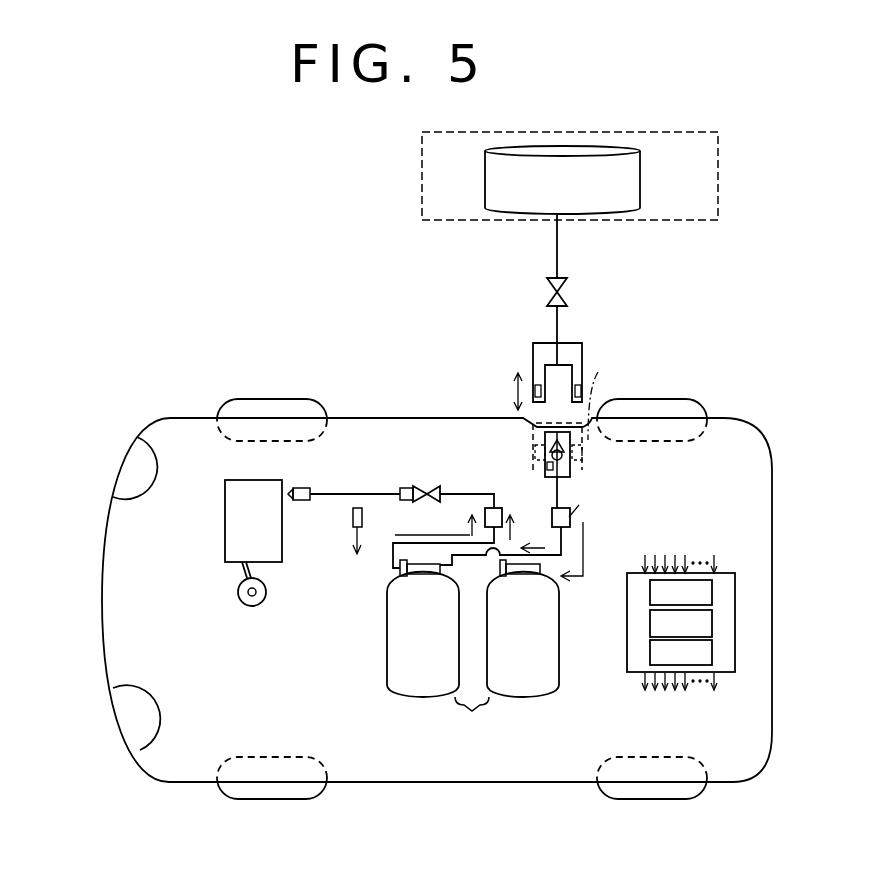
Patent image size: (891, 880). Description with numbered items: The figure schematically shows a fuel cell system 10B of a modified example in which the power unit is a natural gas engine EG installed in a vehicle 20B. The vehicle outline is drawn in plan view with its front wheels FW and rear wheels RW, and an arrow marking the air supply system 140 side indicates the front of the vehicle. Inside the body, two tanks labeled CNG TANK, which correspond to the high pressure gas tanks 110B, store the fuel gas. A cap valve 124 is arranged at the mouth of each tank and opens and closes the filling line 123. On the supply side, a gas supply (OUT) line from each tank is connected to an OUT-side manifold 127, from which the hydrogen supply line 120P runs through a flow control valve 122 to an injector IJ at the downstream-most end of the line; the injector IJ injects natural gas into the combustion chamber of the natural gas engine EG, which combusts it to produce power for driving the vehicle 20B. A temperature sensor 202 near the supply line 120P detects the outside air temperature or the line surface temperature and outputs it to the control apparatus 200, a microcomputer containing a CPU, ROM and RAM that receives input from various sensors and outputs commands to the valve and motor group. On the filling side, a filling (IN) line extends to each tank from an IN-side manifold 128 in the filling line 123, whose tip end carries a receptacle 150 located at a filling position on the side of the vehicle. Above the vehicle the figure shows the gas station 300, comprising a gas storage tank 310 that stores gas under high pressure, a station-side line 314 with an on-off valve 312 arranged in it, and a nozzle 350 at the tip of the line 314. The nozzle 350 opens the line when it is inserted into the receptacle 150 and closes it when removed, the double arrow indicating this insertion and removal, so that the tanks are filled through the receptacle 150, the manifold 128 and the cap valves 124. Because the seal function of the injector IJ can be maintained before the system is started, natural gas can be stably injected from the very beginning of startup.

The fuel cell system 10B is at (723, 300).
The vehicle 20B is at (383, 418).
The air supply system 140 is at (100, 496).
The front wheels FW is at (249, 399).
The rear wheels RW is at (680, 402).
The natural gas engine EG is at (225, 520).
The injector IJ is at (302, 487).
The hydrogen supply line 120P is at (362, 473).
The flow control valve 122 is at (427, 466).
The OUT-side manifold 127 is at (485, 508).
The IN-side manifold 128 is at (570, 508).
The filling line 123 is at (555, 500).
The receptacle 150 is at (583, 462).
The temperature sensor 202 is at (352, 522).
The cap valve 124 is at (497, 573).
The CNG tanks 110B is at (473, 657).
The control apparatus 200 is at (735, 590).
The hydrogen gas station 300 is at (703, 132).
The gas storage tank 310 is at (627, 185).
The on-off valve 312 is at (552, 291).
The station-side line 314 is at (560, 259).
The nozzle 350 is at (583, 360).